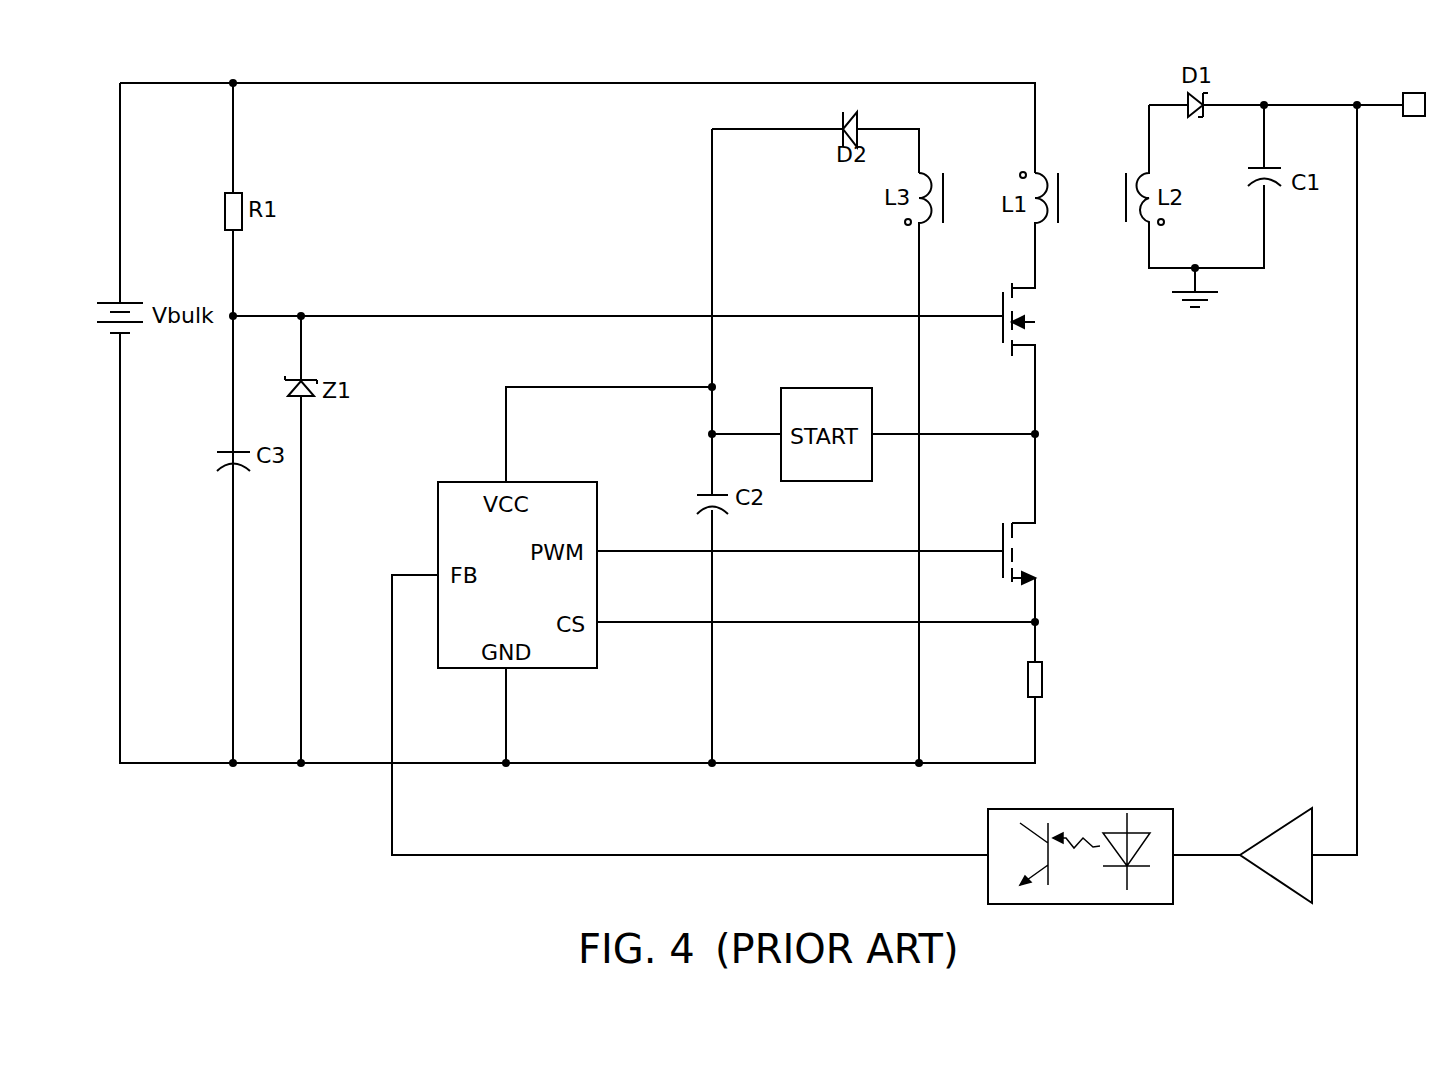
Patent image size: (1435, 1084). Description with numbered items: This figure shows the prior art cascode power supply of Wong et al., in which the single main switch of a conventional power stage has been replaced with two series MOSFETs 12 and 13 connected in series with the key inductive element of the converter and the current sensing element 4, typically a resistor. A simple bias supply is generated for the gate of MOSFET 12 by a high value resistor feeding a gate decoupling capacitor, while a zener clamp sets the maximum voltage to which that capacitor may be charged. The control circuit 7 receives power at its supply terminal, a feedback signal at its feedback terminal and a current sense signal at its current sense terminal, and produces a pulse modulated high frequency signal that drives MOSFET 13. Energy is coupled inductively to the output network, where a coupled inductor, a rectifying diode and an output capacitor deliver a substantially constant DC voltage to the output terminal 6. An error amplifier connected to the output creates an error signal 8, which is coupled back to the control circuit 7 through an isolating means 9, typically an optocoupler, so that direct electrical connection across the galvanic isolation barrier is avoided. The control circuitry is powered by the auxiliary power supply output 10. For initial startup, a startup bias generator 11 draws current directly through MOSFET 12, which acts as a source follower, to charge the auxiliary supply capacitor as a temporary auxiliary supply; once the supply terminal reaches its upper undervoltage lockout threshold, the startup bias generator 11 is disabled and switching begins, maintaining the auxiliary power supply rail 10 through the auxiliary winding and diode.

The current sensing element 4 is at (1043, 682).
The output terminal 6 is at (1414, 93).
The control circuit 7 is at (474, 480).
The error signal 8 is at (1196, 855).
The isolating means 9 is at (1095, 809).
The auxiliary power supply output 10 is at (582, 387).
The startup bias generator 11 is at (813, 388).
The MOSFET 12 is at (1035, 335).
The MOSFET 13 is at (1033, 560).